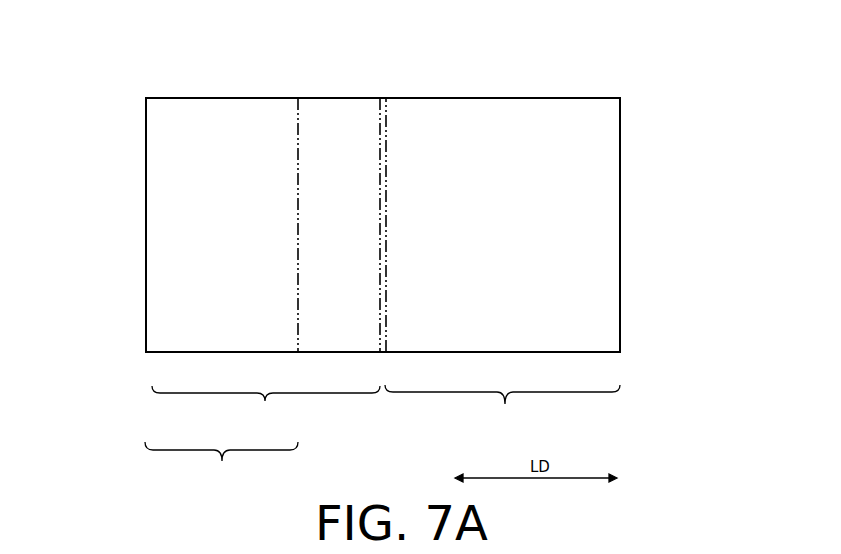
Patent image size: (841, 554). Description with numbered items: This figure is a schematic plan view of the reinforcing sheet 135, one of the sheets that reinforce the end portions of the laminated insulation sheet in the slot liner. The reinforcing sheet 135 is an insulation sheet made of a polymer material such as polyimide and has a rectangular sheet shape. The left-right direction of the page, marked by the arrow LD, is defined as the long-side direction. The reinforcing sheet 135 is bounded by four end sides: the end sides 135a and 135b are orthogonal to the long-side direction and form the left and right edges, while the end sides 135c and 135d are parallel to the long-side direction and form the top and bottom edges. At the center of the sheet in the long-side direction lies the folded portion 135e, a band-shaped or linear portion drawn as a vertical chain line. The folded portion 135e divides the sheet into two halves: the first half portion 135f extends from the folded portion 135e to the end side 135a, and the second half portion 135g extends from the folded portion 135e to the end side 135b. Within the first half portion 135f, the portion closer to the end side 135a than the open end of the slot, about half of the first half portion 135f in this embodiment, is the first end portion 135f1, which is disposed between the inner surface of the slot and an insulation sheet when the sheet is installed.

The reinforcing sheet 135 is at (115, 77).
The end side 135a is at (146, 197).
The end side 135b is at (620, 202).
The end side 135c is at (493, 98).
The end side 135d is at (474, 352).
The folded portion 135e is at (381, 98).
The first half portion 135f is at (266, 408).
The second half portion 135g is at (502, 407).
The first end portion 135f1 is at (221, 292).